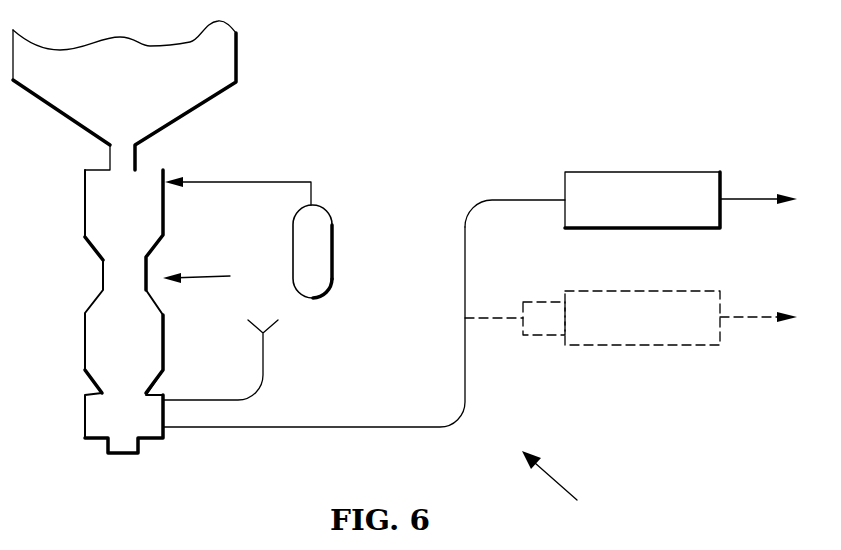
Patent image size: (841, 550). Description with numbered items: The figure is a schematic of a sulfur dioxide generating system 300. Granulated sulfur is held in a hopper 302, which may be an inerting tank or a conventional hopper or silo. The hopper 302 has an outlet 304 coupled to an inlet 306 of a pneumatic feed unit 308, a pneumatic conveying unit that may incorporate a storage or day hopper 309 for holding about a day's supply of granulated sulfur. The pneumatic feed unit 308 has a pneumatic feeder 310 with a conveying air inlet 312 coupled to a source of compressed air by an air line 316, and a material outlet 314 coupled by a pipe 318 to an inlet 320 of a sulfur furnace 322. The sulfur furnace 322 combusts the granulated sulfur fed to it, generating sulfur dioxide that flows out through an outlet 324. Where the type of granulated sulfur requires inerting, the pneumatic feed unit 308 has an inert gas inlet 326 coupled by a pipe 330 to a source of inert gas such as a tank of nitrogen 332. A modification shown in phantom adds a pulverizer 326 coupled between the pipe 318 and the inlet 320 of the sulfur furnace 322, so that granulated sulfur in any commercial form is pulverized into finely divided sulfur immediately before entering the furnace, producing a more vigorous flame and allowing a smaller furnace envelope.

The sulfur dioxide generating system 300 is at (571, 490).
The hopper 302 is at (236, 65).
The outlet 304 is at (138, 143).
The inlet 306 is at (137, 165).
The pneumatic feed unit 308 is at (221, 275).
The day hopper 309 is at (85, 203).
The pneumatic feeder 310 is at (95, 440).
The conveying air inlet 312 is at (167, 396).
The material outlet 314 is at (166, 428).
The air line 316 is at (263, 358).
The pipe 318 is at (360, 427).
The inlet 320 is at (558, 199).
The sulfur furnace 322 is at (603, 172).
The outlet 324 is at (722, 195).
The inert gas inlet 326 is at (165, 190).
The pipe 330 is at (265, 181).
The tank of nitrogen 332 is at (331, 217).